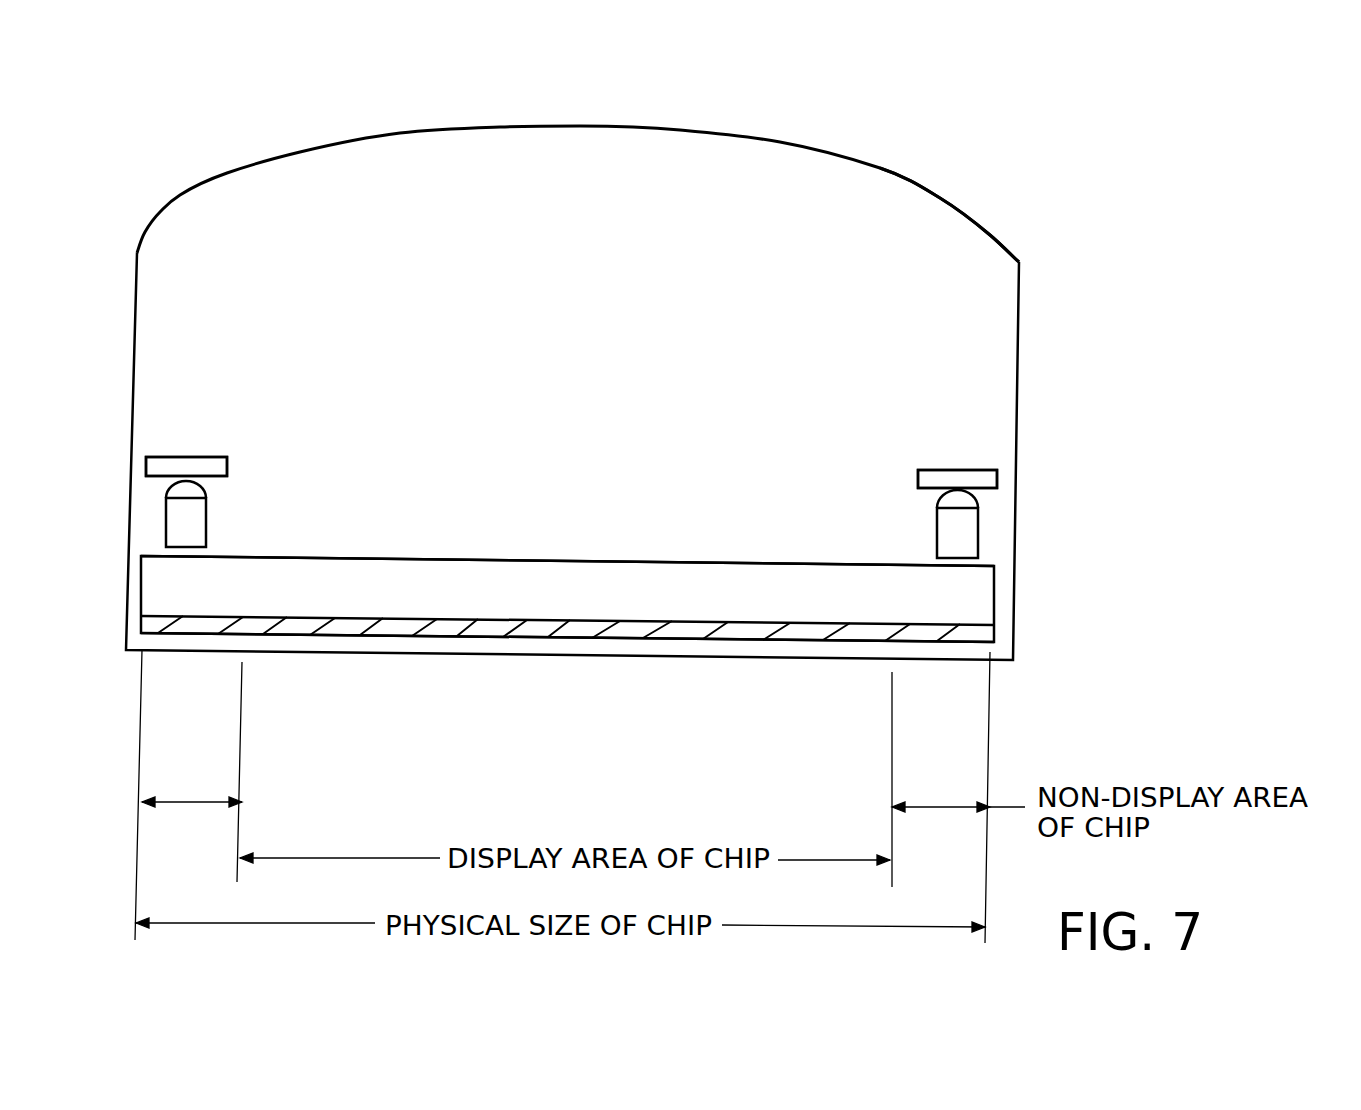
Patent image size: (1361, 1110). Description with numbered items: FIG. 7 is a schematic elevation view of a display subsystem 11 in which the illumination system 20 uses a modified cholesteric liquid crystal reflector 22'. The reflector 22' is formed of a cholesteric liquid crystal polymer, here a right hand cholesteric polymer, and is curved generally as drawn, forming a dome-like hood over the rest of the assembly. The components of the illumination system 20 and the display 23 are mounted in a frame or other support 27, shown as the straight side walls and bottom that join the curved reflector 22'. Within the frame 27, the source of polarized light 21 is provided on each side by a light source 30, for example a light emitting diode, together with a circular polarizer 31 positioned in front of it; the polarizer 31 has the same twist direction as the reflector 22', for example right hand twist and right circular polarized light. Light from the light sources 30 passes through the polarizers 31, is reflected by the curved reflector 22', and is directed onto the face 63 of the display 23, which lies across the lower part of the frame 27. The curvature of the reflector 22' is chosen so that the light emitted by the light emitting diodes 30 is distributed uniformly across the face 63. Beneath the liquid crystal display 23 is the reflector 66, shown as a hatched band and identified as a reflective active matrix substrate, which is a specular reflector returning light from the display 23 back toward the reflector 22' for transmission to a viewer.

The display subsystem 11 is at (1012, 130).
The illumination system 20 is at (957, 240).
The source of polarized light 21 is at (203, 430).
The cholesteric liquid crystal reflector 22' is at (891, 155).
The display 23 is at (773, 563).
The frame 27 is at (128, 447).
The light source 30 is at (207, 523).
The circular polarizer 31 is at (228, 466).
The face of the display 63 is at (667, 537).
The reflector 66 is at (702, 628).